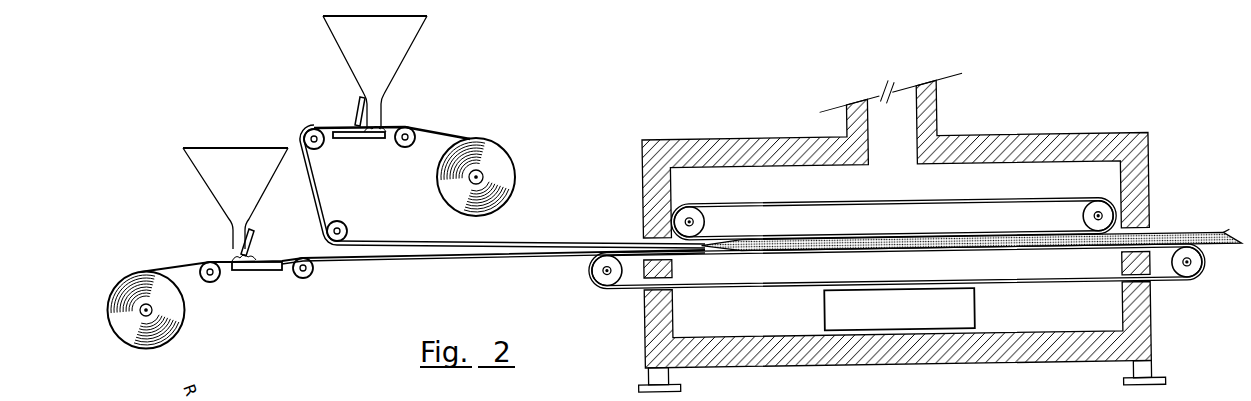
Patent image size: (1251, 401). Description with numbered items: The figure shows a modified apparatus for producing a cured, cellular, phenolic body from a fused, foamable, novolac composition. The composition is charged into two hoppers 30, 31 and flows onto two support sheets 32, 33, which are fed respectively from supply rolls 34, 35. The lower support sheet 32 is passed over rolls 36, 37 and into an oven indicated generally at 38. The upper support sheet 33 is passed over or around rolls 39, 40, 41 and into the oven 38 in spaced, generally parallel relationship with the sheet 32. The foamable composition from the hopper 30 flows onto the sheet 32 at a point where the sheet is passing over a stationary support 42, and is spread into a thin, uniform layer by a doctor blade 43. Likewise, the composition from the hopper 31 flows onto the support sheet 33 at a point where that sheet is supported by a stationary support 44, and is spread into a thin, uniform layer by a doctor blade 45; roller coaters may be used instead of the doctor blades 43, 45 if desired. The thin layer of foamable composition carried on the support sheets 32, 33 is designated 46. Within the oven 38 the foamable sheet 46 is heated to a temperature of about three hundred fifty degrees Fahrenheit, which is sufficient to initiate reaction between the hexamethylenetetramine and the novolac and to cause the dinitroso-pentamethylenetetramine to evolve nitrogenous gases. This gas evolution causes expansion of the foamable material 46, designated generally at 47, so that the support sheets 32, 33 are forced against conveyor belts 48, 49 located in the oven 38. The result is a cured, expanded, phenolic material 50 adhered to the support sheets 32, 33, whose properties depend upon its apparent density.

The hopper 30 is at (195, 174).
The hopper 31 is at (409, 47).
The support sheet 32 is at (173, 264).
The support sheet 33 is at (440, 128).
The supply roll 34 is at (186, 314).
The supply roll 35 is at (446, 206).
The roll 36 is at (208, 284).
The roll 37 is at (298, 280).
The oven 38 is at (636, 134).
The roll 39 is at (398, 147).
The roll 40 is at (314, 150).
The roll 41 is at (343, 222).
The stationary support 42 is at (246, 272).
The doctor blade 43 is at (257, 234).
The stationary support 44 is at (348, 140).
The doctor blade 45 is at (355, 104).
The thin layer of foamable composition 46 is at (312, 196).
The expansion of the foamable material 47 is at (750, 236).
The conveyor belt 48 is at (1177, 282).
The conveyor belt 49 is at (1108, 202).
The cured expanded phenolic material 50 is at (1202, 228).